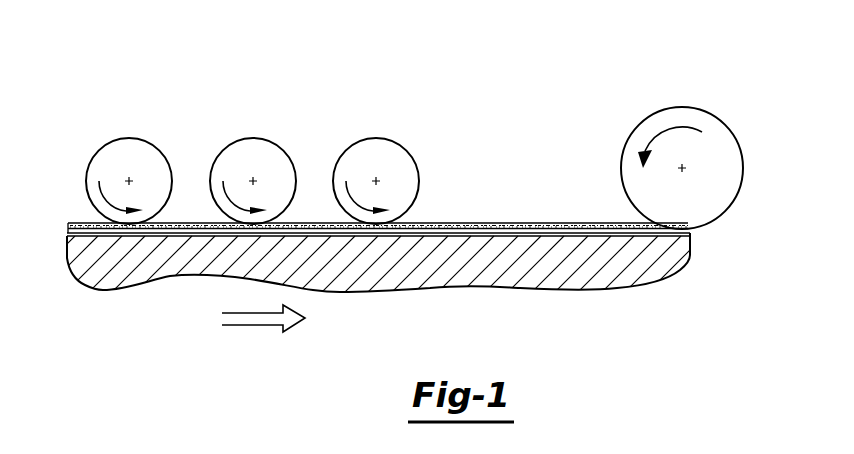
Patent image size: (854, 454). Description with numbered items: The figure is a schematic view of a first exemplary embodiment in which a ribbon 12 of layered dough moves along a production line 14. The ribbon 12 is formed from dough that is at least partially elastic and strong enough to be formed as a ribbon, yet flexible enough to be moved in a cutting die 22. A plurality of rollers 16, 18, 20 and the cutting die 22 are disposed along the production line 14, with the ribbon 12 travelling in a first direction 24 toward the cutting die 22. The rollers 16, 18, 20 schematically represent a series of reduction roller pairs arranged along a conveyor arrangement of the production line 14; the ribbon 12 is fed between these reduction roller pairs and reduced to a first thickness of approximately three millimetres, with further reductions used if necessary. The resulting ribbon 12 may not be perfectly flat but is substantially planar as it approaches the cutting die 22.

The ribbon 12 is at (519, 222).
The production line 14 is at (481, 80).
The roller 16 is at (128, 158).
The roller 18 is at (252, 158).
The roller 20 is at (375, 157).
The cutting die 22 is at (684, 88).
The first direction 24 is at (252, 326).